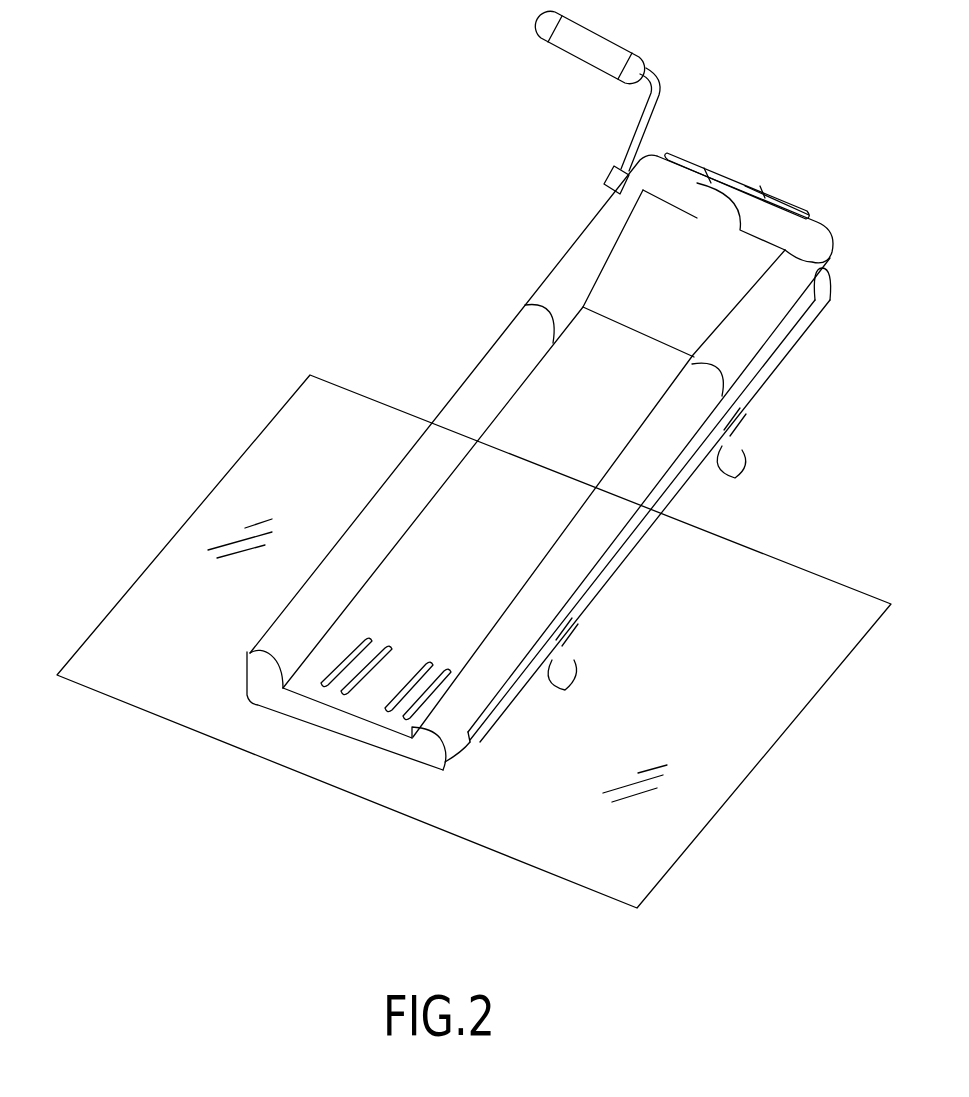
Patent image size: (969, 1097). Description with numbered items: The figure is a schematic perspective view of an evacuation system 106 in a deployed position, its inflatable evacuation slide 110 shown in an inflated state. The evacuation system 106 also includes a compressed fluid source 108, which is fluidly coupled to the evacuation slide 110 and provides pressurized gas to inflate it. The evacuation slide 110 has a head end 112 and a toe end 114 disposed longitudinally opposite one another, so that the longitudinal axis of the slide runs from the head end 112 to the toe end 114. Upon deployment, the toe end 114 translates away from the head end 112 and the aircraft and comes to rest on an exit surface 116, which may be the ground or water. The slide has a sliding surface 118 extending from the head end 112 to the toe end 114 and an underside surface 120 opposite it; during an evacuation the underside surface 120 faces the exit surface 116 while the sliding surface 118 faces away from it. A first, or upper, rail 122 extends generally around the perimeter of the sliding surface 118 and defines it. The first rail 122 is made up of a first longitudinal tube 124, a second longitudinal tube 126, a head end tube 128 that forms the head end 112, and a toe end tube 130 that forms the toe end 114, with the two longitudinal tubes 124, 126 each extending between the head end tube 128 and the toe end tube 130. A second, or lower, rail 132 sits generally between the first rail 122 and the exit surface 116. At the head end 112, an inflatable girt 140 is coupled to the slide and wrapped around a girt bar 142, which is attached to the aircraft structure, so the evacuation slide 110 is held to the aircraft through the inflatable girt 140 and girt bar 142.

The evacuation system 106 is at (512, 42).
The compressed fluid source 108 is at (570, 42).
The evacuation slide 110 is at (543, 217).
The head end 112 is at (809, 222).
The toe end 114 is at (289, 712).
The exit surface 116 is at (607, 841).
The sliding surface 118 is at (569, 462).
The underside surface 120 is at (543, 672).
The first rail 122 is at (470, 375).
The first longitudinal tube 124 is at (527, 362).
The second longitudinal tube 126 is at (650, 427).
The head end tube 128 is at (675, 170).
The toe end tube 130 is at (332, 720).
The second rail 132 is at (622, 550).
The inflatable girt 140 is at (737, 182).
The girt bar 142 is at (778, 195).